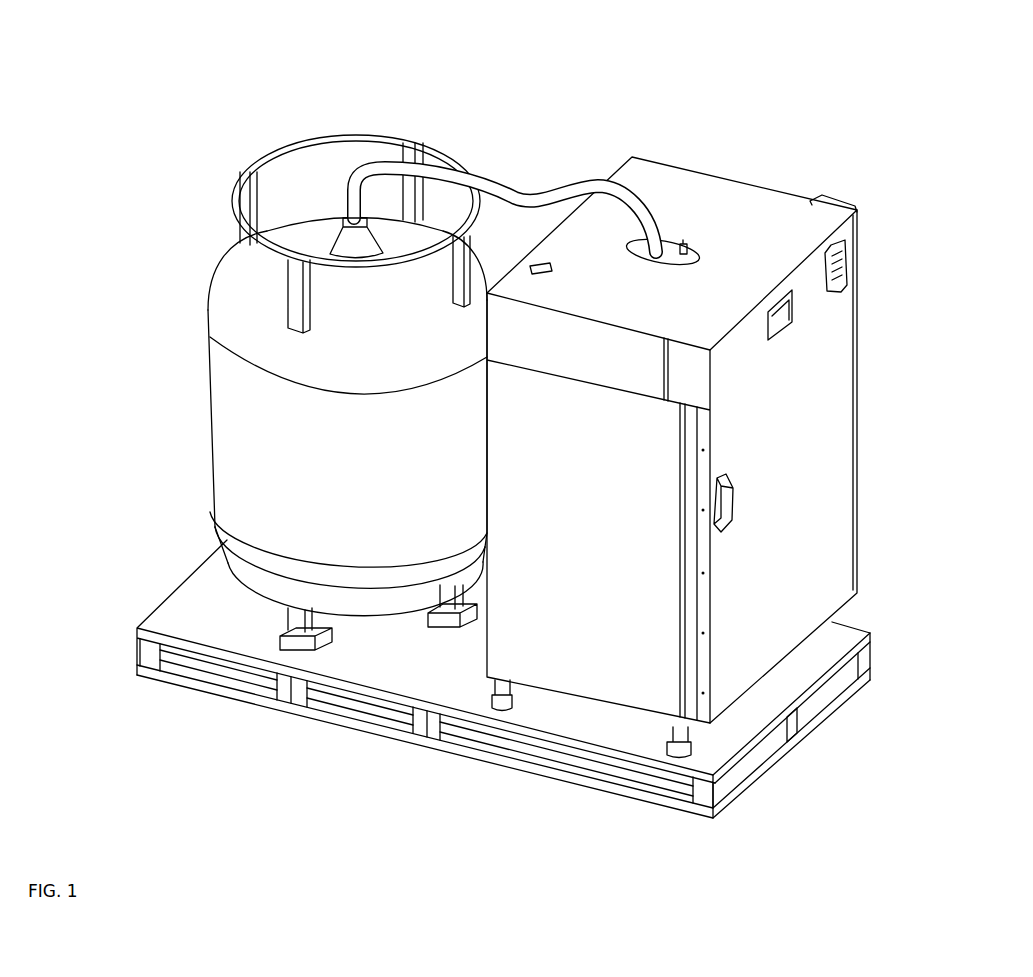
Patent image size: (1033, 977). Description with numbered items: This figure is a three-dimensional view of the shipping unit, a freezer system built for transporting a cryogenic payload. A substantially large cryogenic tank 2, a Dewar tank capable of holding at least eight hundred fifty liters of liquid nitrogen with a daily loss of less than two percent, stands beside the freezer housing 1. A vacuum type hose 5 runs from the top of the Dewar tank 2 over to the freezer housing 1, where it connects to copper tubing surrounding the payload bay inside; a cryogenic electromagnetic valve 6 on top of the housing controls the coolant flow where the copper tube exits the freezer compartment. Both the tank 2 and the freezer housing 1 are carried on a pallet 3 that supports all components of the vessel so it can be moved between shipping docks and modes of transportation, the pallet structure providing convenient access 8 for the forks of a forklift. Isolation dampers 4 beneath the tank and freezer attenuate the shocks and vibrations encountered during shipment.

The freezer housing 1 is at (793, 497).
The cryogenic tank 2 is at (233, 418).
The pallet 3 is at (178, 618).
The isolation dampers 4 is at (500, 707).
The vacuum type hose 5 is at (505, 183).
The cryogenic electromagnetic valve 6 is at (683, 250).
The forklift access 8 is at (763, 753).